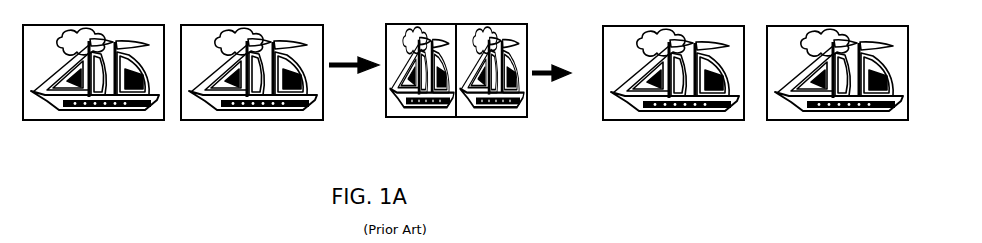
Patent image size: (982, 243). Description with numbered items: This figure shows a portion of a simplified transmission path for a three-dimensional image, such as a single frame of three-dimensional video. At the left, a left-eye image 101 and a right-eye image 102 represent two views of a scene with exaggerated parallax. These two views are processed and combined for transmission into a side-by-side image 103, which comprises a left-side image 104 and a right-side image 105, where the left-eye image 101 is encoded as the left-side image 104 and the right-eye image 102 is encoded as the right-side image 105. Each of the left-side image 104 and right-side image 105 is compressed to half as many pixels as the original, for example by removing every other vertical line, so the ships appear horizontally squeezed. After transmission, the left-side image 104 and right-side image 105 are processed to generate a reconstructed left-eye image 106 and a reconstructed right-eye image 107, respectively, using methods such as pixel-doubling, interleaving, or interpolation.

The left-eye image 101 is at (75, 127).
The right-eye image 102 is at (219, 127).
The side-by-side image 103 is at (456, 99).
The left-side image 104 is at (419, 117).
The right-side image 105 is at (491, 117).
The reconstructed left-eye image 106 is at (643, 127).
The reconstructed right-eye image 107 is at (795, 130).